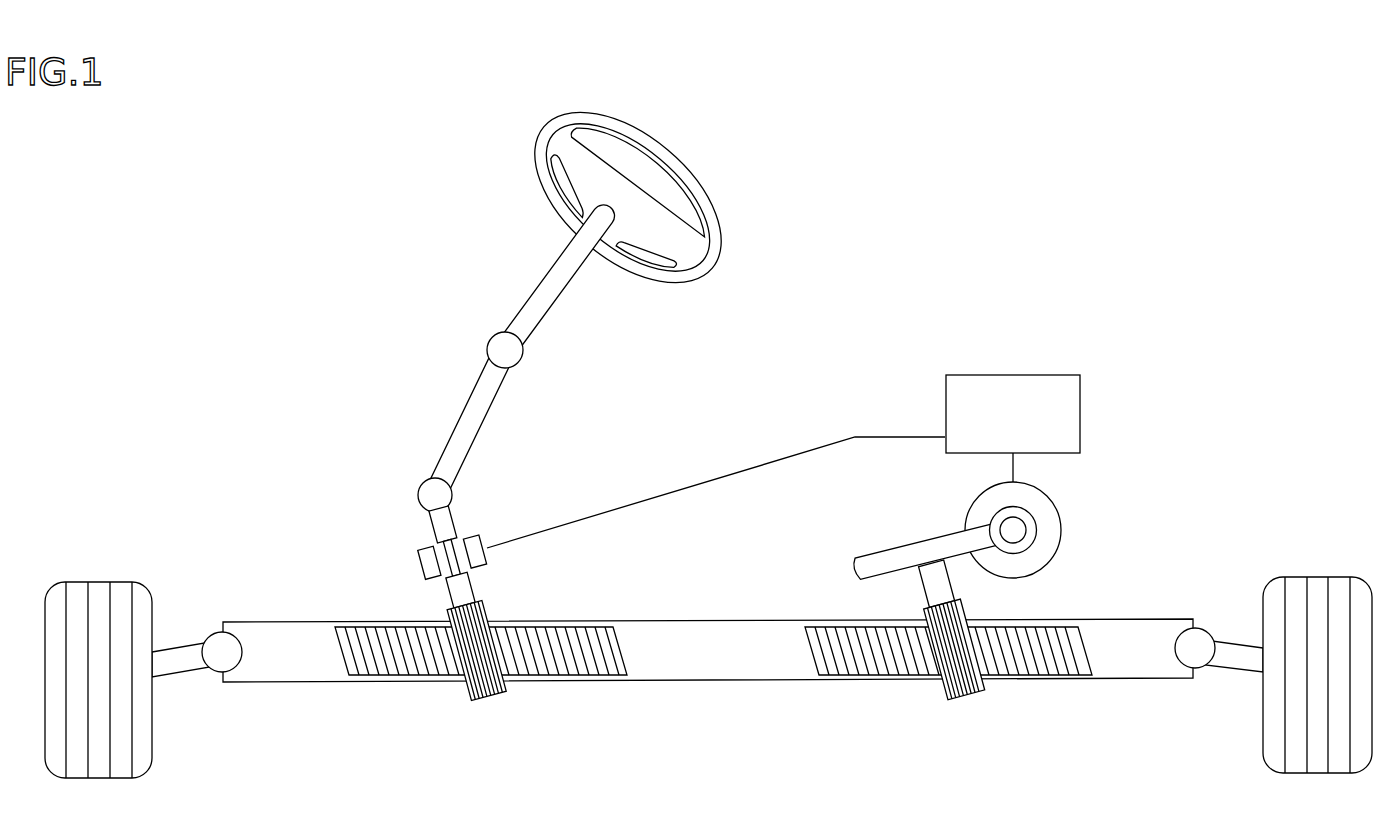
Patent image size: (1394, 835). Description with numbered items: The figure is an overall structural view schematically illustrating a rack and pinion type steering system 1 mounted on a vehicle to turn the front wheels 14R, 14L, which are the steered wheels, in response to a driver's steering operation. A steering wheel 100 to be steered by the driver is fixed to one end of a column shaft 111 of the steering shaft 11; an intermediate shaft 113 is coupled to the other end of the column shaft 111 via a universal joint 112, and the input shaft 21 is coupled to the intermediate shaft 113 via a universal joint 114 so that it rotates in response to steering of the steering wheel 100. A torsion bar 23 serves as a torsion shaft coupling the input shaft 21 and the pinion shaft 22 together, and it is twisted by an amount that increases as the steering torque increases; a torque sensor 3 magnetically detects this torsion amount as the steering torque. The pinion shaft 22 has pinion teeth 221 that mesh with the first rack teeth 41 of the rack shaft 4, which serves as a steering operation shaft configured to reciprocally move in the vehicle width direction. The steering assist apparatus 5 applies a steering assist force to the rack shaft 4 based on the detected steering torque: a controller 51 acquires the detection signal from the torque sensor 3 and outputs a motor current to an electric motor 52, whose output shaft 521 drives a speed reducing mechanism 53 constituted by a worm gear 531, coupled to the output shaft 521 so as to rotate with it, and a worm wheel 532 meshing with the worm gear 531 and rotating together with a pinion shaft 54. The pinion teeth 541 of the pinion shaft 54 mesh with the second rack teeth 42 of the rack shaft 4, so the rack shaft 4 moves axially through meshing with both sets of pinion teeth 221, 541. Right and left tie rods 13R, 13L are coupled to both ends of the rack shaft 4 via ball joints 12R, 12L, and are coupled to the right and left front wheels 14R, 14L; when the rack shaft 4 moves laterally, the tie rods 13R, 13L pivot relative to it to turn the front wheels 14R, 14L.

The steering system 1 is at (433, 205).
The steering wheel 100 is at (672, 140).
The steering shaft 11 is at (515, 358).
The column shaft 111 is at (547, 322).
The universal joint 112 is at (523, 357).
The intermediate shaft 113 is at (493, 400).
The universal joint 114 is at (422, 492).
The input shaft 21 is at (455, 522).
The pinion shaft 22 is at (472, 588).
The pinion teeth 221 is at (468, 700).
The torsion bar 23 is at (450, 556).
The torque sensor 3 is at (418, 558).
The rack shaft 4 is at (597, 618).
The first rack teeth 41 is at (597, 675).
The second rack teeth 42 is at (1063, 660).
The steering assist apparatus 5 is at (1117, 370).
The controller 51 is at (1020, 373).
The electric motor 52 is at (1062, 520).
The output shaft 521 is at (1018, 532).
The speed reducing mechanism 53 is at (925, 518).
The worm gear 531 is at (997, 515).
The worm wheel 532 is at (943, 533).
The pinion shaft 54 is at (950, 578).
The pinion teeth 541 is at (948, 698).
The ball joint 12R is at (212, 633).
The ball joint 12L is at (1203, 628).
The right tie rod 13R is at (183, 672).
The left tie rod 13L is at (1245, 672).
The right front wheel 14R is at (100, 582).
The left front wheel 14L is at (1322, 577).